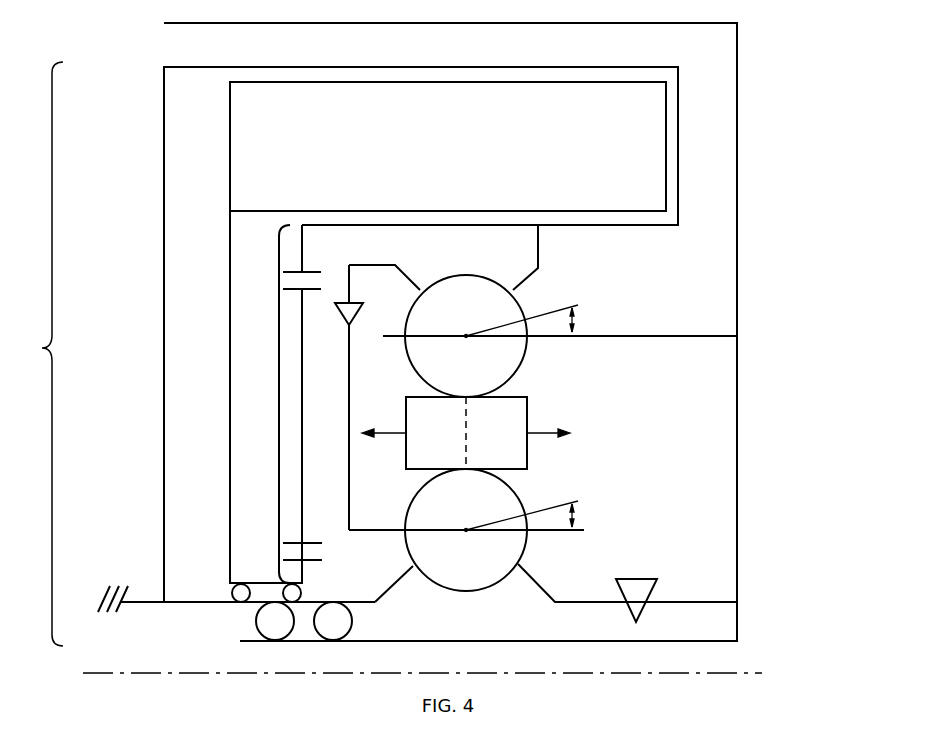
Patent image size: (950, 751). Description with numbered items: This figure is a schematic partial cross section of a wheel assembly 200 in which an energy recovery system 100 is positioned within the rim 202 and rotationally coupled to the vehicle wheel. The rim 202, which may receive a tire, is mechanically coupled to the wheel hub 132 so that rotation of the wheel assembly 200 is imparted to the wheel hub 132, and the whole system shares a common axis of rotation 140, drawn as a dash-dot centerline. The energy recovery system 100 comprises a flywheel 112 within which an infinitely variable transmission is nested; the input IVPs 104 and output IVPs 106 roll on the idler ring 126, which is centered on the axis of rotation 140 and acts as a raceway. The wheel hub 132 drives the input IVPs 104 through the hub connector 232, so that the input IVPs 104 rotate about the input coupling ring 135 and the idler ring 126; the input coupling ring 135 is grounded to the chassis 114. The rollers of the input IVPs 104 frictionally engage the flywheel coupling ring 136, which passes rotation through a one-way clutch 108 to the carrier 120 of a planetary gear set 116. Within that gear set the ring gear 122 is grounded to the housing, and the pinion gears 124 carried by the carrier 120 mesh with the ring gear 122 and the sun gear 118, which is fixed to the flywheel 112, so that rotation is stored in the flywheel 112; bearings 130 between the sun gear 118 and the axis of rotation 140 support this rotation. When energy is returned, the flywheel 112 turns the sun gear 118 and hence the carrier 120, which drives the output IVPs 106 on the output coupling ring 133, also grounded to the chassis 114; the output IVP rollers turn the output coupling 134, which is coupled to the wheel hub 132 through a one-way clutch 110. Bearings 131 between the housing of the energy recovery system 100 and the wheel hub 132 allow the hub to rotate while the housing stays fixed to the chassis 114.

The energy recovery system 100 is at (33, 354).
The wheel assembly 200 is at (812, 72).
The rim 202 is at (737, 37).
The input IVPs 104 is at (527, 340).
The output IVPs 106 is at (527, 535).
The one-way clutch 108 is at (357, 313).
The one-way clutch 110 is at (637, 579).
The flywheel 112 is at (666, 152).
The chassis 114 is at (109, 597).
The planetary gear set 116 is at (279, 403).
The sun gear 118 is at (302, 567).
The carrier 120 is at (302, 458).
The ring gear 122 is at (302, 252).
The pinion gears 124 is at (310, 289).
The idler ring 126 is at (527, 412).
The bearings 130 is at (232, 591).
The bearings 131 is at (256, 622).
The wheel hub 132 is at (657, 641).
The output coupling ring 133 is at (396, 585).
The output coupling 134 is at (580, 602).
The input coupling ring 135 is at (540, 243).
The flywheel coupling ring 136 is at (408, 265).
The axis of rotation 140 is at (160, 671).
The hub connector 232 is at (697, 335).